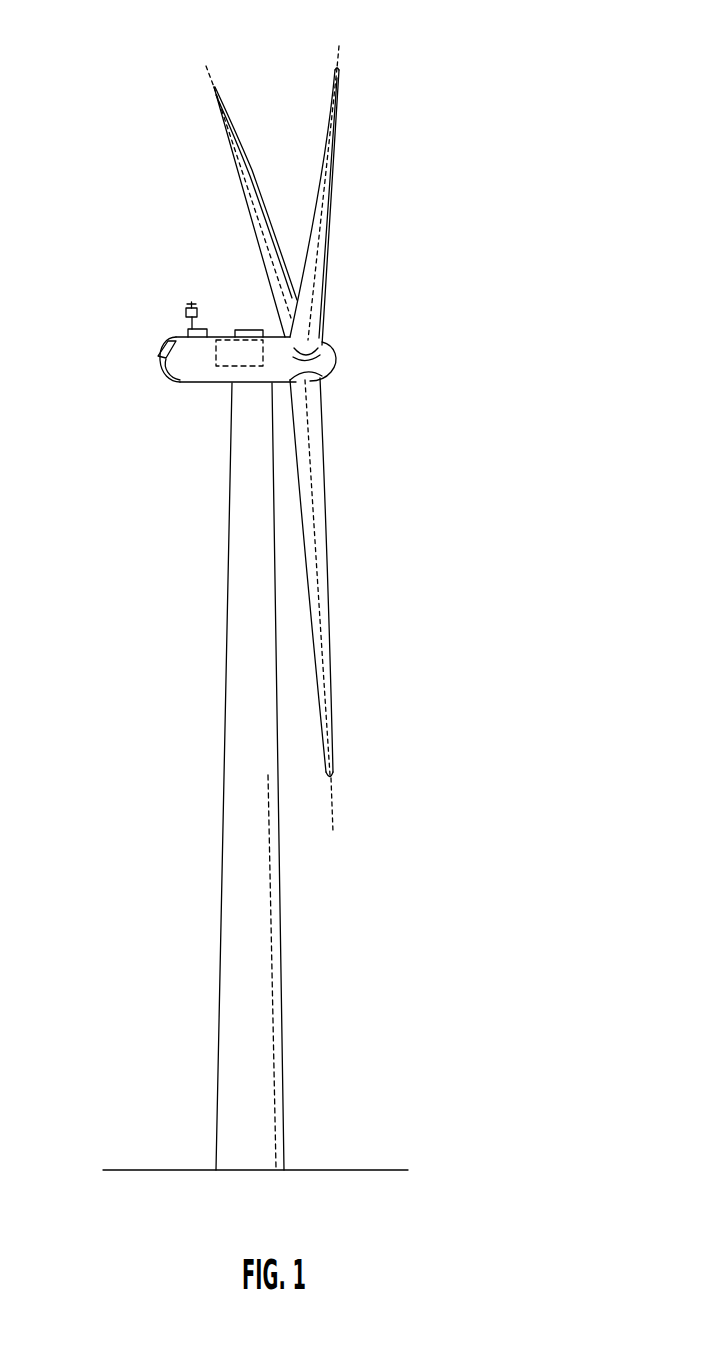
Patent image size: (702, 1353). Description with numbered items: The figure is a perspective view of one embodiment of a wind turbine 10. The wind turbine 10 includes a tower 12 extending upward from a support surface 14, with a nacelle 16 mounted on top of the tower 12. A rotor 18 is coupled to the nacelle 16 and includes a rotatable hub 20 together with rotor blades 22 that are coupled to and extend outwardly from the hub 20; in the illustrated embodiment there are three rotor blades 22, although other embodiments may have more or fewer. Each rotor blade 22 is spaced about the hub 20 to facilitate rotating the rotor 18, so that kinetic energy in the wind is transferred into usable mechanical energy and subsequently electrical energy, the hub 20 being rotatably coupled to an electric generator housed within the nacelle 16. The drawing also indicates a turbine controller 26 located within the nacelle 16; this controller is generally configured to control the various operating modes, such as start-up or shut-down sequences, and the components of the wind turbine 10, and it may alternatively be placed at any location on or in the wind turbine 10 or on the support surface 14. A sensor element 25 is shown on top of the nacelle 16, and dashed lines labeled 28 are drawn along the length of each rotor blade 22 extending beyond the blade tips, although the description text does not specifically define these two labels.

The wind turbine 10 is at (457, 143).
The tower 12 is at (238, 838).
The support surface 14 is at (176, 1170).
The nacelle 16 is at (196, 384).
The rotor 18 is at (340, 331).
The rotatable hub 20 is at (334, 364).
The rotor blade 22 is at (315, 225).
The sensor 25 is at (189, 333).
The turbine controller 26 is at (231, 335).
The pitch axis 28 is at (240, 172).